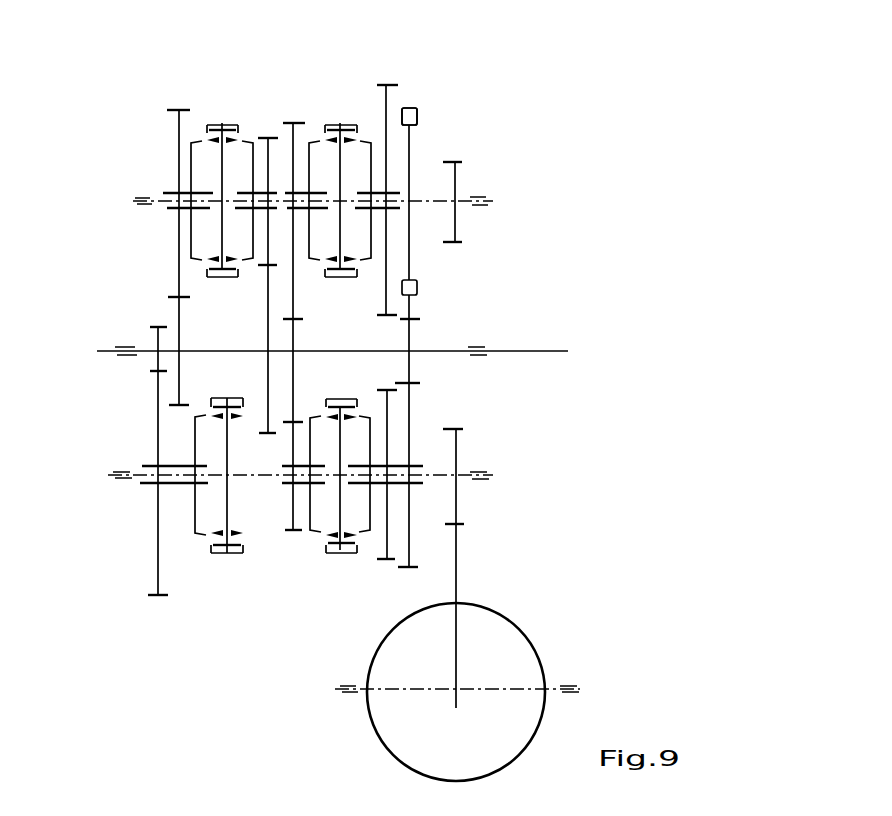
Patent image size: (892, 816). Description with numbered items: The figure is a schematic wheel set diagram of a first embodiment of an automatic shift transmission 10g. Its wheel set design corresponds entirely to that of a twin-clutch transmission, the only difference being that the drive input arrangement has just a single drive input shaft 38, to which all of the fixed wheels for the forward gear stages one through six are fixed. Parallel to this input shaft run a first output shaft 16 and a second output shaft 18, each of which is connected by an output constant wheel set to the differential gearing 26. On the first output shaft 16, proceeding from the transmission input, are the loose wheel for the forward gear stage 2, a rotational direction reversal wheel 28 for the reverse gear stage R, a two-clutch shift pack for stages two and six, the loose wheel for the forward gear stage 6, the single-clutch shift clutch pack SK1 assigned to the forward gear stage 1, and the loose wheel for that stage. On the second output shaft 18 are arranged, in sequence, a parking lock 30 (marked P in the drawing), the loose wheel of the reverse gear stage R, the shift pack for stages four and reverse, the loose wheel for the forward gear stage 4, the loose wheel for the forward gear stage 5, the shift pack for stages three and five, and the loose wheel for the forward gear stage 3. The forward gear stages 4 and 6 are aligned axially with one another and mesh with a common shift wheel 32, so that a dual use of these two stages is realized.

The forward gear stage 1 is at (174, 476).
The forward gear stage 2 is at (385, 458).
The forward gear stage 3 is at (188, 244).
The forward gear stage 4 is at (305, 258).
The forward gear stage 5 is at (256, 272).
The forward gear stage 6 is at (303, 489).
The reverse gear stage R is at (376, 194).
The parking lock P is at (410, 196).
The automatic shift transmission 10g is at (632, 227).
The first output shaft 16 is at (458, 470).
The second output shaft 18 is at (461, 198).
The differential gearing 26 is at (523, 627).
The rotational direction reversal wheel 28 is at (389, 542).
The parking lock 30 is at (418, 112).
The common shift wheel 32 is at (293, 319).
The drive input shaft 38 is at (537, 340).
The shift clutch pack SK1 is at (227, 556).